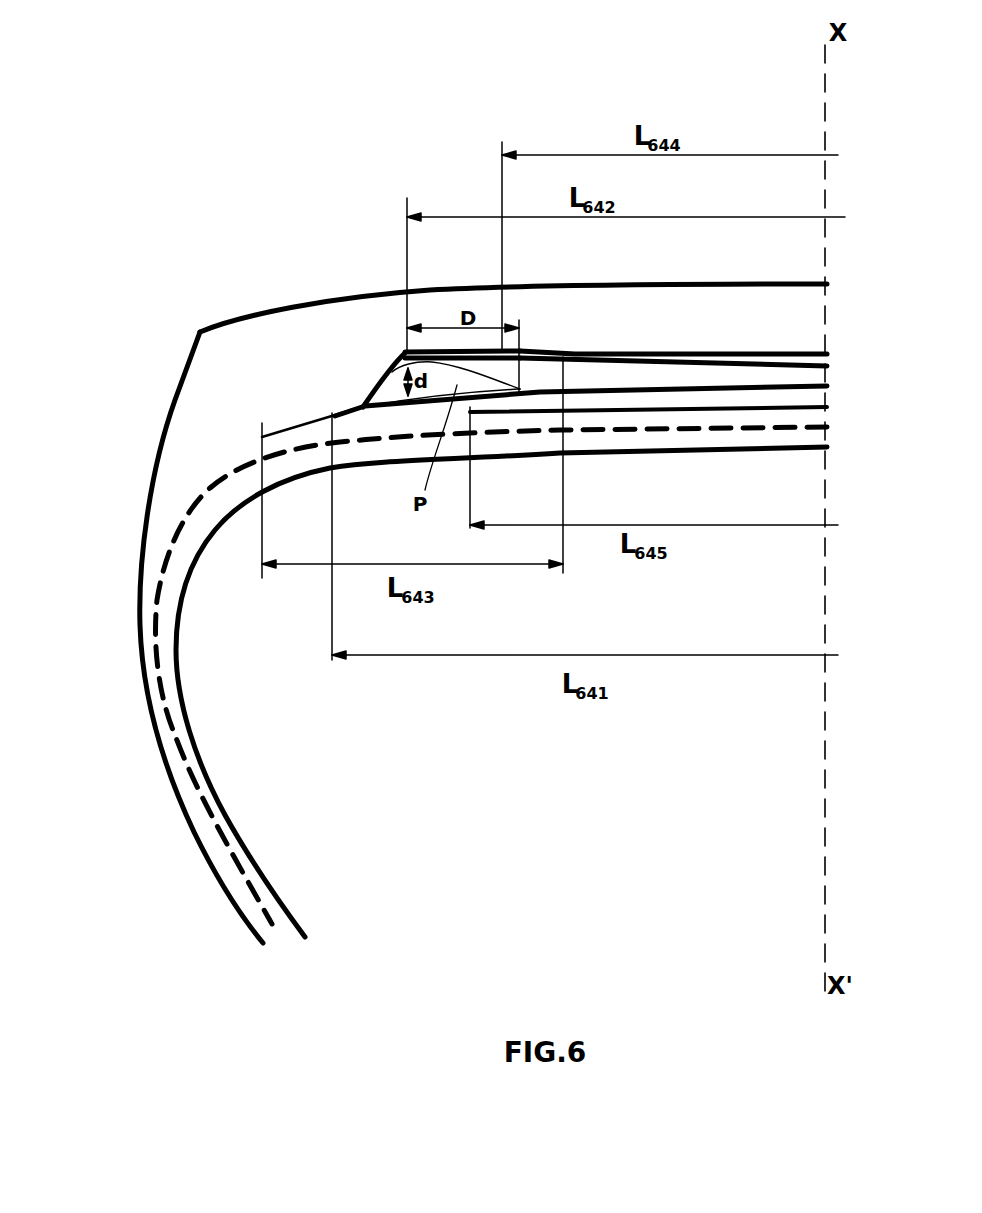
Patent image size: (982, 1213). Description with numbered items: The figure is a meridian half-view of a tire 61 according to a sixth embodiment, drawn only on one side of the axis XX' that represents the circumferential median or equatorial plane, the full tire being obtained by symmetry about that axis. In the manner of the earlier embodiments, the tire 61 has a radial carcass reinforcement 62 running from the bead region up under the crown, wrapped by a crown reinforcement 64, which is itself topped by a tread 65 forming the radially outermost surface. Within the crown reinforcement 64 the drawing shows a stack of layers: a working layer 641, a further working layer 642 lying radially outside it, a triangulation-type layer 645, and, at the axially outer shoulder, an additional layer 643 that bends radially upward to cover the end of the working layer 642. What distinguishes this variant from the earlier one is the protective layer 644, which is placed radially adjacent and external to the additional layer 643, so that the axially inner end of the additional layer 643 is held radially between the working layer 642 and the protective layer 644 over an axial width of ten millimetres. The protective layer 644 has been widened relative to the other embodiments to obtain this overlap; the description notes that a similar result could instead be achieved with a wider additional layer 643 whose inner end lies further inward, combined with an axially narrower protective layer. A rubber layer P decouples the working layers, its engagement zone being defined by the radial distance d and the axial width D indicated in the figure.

The tire 61 is at (107, 300).
The carcass ply 62 is at (168, 554).
The bead reinforcing structure 64 is at (850, 378).
The outer surface 65 is at (723, 300).
The first reinforcing layer 641 is at (792, 388).
The working layer 642 is at (767, 362).
The additional layer 643 is at (362, 403).
The protective layer 644 is at (638, 352).
The inner reinforcing layer 645 is at (670, 417).